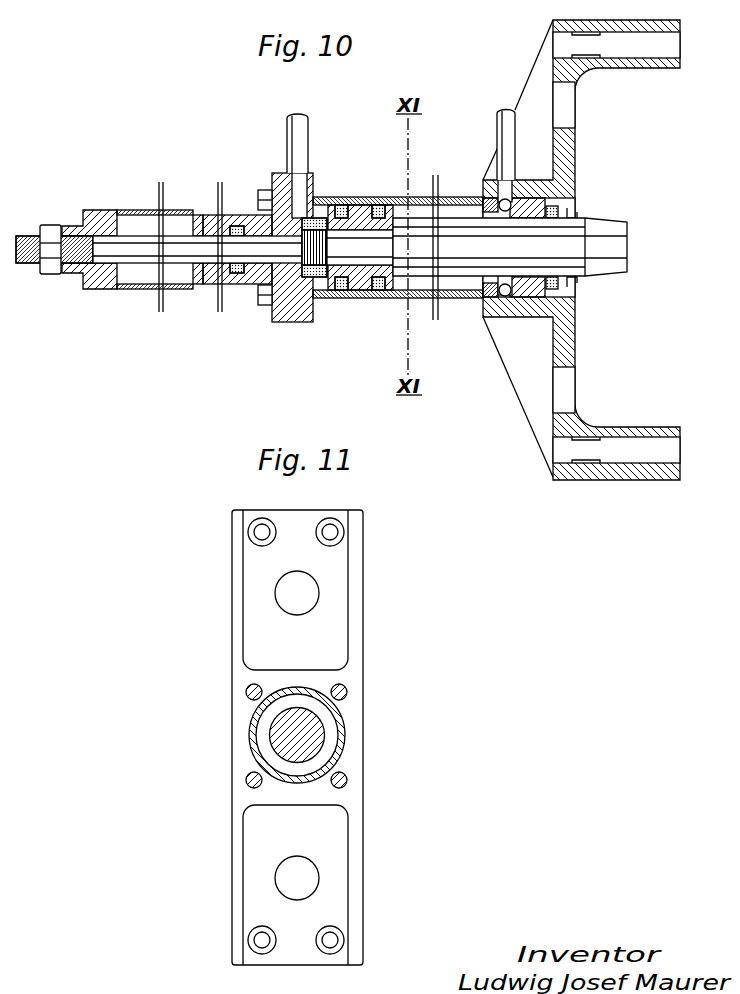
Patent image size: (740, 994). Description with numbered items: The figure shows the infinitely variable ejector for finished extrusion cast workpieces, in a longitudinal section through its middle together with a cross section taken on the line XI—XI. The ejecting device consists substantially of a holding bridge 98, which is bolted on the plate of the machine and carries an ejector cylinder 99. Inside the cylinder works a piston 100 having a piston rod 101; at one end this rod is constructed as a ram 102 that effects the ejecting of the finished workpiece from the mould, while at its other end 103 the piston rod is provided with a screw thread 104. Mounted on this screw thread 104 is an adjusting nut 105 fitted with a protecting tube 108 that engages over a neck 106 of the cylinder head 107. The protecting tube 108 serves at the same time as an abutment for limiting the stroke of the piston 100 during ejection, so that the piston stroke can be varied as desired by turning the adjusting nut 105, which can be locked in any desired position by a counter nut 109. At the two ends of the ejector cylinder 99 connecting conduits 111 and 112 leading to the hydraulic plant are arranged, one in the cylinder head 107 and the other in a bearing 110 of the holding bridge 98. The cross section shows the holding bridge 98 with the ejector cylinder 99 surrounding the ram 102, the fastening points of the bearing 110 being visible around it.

In FIG. 10, the holding bridge 98 is at (572, 152).
In FIG. 11, the holding bridge 98 is at (265, 835).
In FIG. 10, the ejector cylinder 99 is at (445, 197).
In FIG. 11, the ejector cylinder 99 is at (250, 736).
In FIG. 10, the piston 100 is at (352, 206).
In FIG. 10, the piston rod 101 is at (363, 250).
In FIG. 10, the ram 102 is at (605, 266).
In FIG. 11, the ram 102 is at (290, 720).
In FIG. 10, the other end of the piston rod 103 is at (128, 245).
In FIG. 10, the screw thread 104 is at (32, 236).
In FIG. 10, the adjusting nut 105 is at (80, 224).
In FIG. 10, the neck 106 is at (213, 284).
In FIG. 10, the cylinder head 107 is at (285, 322).
In FIG. 10, the protecting tube 108 is at (133, 290).
In FIG. 10, the counter nut 109 is at (53, 274).
In FIG. 10, the bearing 110 is at (488, 189).
In FIG. 11, the bearing 110 is at (250, 762).
In FIG. 10, the connecting conduit 111 is at (288, 135).
In FIG. 10, the connecting conduit 112 is at (497, 122).